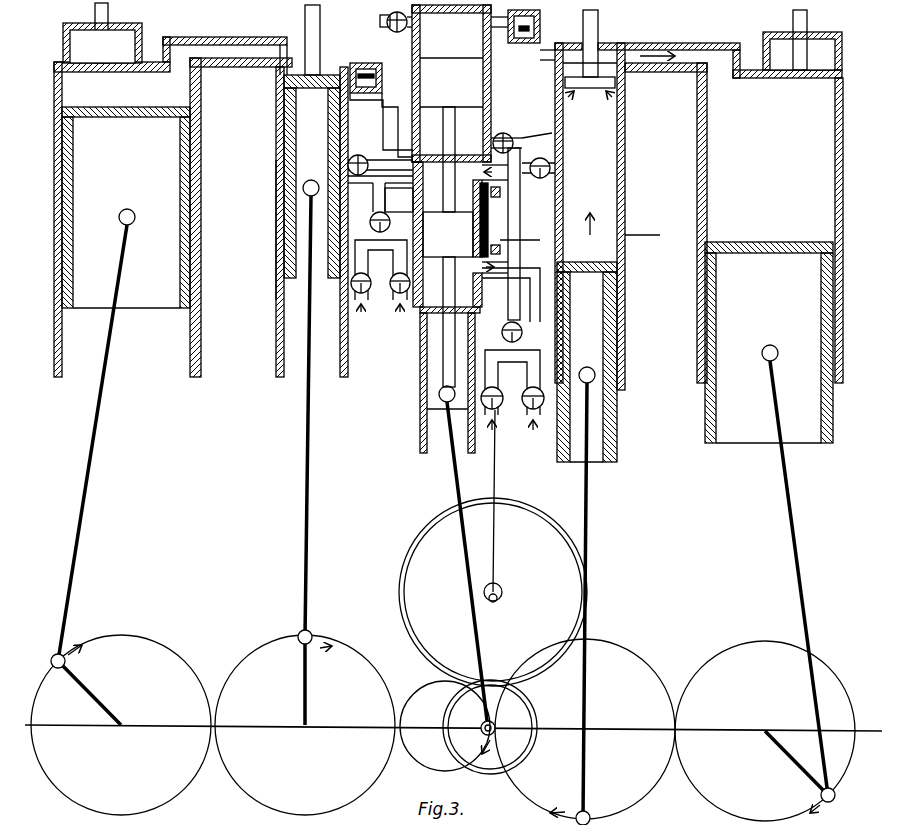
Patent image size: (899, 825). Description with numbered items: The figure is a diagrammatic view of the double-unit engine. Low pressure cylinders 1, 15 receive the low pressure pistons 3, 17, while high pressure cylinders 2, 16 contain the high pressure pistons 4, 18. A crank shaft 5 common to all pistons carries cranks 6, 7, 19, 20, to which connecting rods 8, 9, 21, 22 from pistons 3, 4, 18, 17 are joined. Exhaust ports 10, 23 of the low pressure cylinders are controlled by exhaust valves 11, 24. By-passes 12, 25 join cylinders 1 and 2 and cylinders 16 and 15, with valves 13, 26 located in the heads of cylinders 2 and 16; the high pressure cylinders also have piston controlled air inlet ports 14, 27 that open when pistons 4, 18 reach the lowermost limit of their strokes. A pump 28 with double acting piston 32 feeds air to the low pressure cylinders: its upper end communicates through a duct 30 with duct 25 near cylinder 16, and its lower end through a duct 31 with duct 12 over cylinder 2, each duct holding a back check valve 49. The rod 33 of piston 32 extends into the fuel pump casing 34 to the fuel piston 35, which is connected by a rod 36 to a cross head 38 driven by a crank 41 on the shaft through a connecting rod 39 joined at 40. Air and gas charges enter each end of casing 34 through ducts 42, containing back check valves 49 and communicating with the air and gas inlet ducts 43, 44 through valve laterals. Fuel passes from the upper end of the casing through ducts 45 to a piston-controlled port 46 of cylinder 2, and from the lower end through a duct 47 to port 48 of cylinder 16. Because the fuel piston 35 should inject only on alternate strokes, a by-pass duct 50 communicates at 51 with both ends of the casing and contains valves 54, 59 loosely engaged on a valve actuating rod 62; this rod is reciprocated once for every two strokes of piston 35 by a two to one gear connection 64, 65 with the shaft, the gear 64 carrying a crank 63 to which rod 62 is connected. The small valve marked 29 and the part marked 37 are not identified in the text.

The low pressure cylinder 1 is at (183, 218).
The high pressure cylinder 2 is at (276, 174).
The low pressure piston 3 is at (126, 207).
The high pressure piston 4 is at (316, 222).
The crank shaft 5 is at (152, 718).
The crank 6 is at (102, 662).
The crank 7 is at (330, 665).
The connecting rod 8 is at (108, 302).
The connecting rod 9 is at (308, 345).
The exhaust port 10 is at (93, 22).
The exhaust valve 11 is at (132, 40).
The by-pass 12 is at (236, 46).
The by-pass valve 13 is at (328, 40).
The air inlet port 14 is at (276, 247).
The low pressure cylinder 15 is at (697, 196).
The high pressure cylinder 16 is at (622, 198).
The low pressure piston 17 is at (795, 233).
The high pressure piston 18 is at (587, 362).
The crank 19 is at (590, 768).
The crank 20 is at (808, 735).
The connecting rod 21 is at (620, 492).
The connecting rod 22 is at (792, 462).
The exhaust port 23 is at (778, 28).
The exhaust valve 24 is at (806, 32).
The by-pass 25 is at (692, 32).
The by-pass valve 26 is at (592, 44).
The air inlet port 27 is at (642, 239).
The pump 28 is at (451, 83).
The valve 29 is at (517, 134).
The duct 30 is at (527, 35).
The duct 31 is at (395, 108).
The piston 32 is at (451, 87).
The rod 33 is at (450, 122).
The fuel pump casing 34 is at (399, 202).
The fuel piston 35 is at (448, 234).
The rod 36 is at (446, 272).
The cylinder 37 is at (418, 348).
The cross head 38 is at (447, 383).
The connecting rod 39 is at (445, 493).
The joint 40 is at (501, 718).
The crank 41 is at (460, 726).
The duct 42 is at (378, 200).
The air inlet duct 43 is at (445, 342).
The gas inlet duct 44 is at (467, 367).
The duct 45 is at (431, 141).
The piston-controlled port 46 is at (380, 152).
The duct 47 is at (520, 208).
The port 48 is at (556, 168).
The back check valve 49 is at (374, 68).
The by-pass duct 50 is at (541, 137).
The communication 51 is at (481, 233).
The valve 54 is at (500, 192).
The valve 59 is at (578, 231).
The valve actuating rod 62 is at (498, 490).
The crank 63 is at (502, 600).
The gear 64 is at (565, 510).
The gear 65 is at (538, 710).